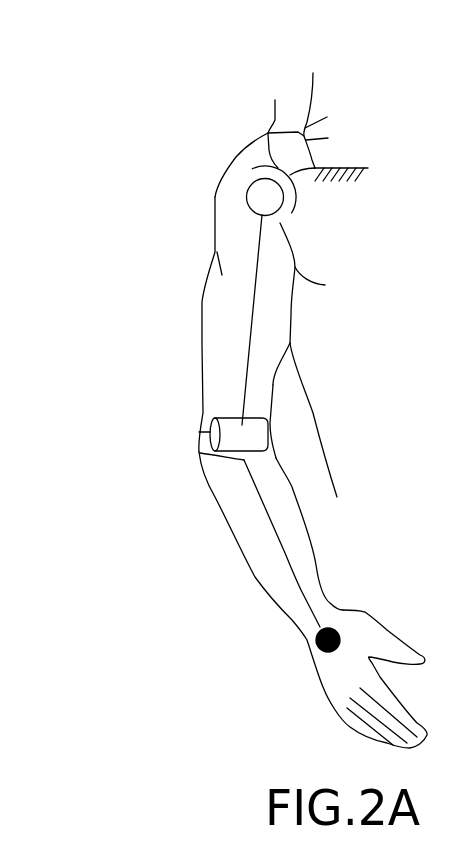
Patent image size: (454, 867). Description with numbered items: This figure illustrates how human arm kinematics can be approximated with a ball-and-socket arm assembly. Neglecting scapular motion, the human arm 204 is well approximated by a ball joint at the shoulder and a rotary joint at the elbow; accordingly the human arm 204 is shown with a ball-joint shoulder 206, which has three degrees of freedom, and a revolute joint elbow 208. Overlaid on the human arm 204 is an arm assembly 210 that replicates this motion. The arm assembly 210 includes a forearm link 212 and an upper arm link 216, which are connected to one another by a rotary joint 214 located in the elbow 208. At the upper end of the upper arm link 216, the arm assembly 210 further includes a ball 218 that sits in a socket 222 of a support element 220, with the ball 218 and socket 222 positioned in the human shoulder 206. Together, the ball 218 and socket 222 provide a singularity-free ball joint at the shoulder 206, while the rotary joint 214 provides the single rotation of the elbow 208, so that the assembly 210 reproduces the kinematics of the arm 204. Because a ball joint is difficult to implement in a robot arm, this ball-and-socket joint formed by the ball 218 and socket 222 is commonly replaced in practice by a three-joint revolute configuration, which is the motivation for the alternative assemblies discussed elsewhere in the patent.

The arm 204 is at (202, 332).
The shoulder 206 is at (221, 176).
The elbow 208 is at (200, 453).
The arm assembly 210 is at (218, 504).
The forearm link 212 is at (285, 553).
The rotary joint 214 is at (260, 432).
The upper arm link 216 is at (257, 317).
The ball 218 is at (246, 197).
The support element 220 is at (333, 114).
The socket 222 is at (274, 119).